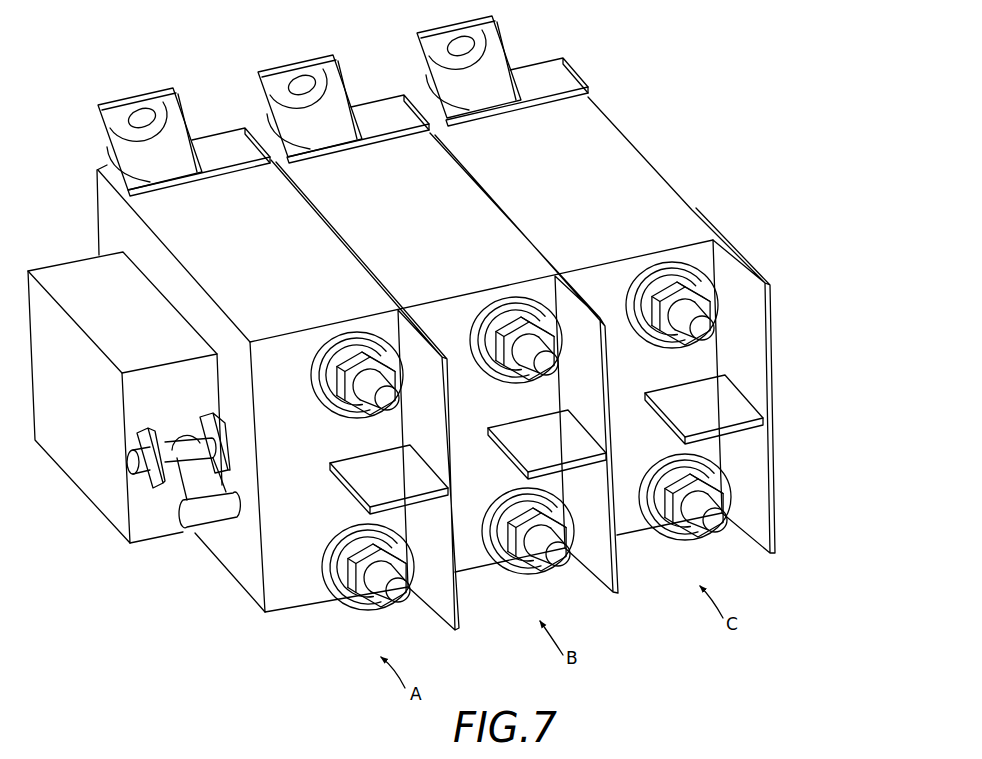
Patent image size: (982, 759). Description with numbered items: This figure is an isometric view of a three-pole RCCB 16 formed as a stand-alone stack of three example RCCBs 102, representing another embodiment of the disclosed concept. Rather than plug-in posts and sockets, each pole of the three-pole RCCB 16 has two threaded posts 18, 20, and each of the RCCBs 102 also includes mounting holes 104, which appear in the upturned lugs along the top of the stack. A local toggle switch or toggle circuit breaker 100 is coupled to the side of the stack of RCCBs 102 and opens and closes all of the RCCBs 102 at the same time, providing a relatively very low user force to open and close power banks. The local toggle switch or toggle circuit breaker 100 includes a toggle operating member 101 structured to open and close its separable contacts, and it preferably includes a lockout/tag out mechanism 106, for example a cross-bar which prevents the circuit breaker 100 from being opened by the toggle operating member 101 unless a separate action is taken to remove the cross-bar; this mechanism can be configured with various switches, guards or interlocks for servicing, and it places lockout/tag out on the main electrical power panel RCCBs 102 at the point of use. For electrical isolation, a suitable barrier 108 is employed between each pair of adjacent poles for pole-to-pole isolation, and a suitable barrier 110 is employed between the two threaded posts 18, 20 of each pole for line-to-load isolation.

The three-pole RCCB 16 is at (683, 138).
The threaded post 18 is at (387, 400).
The threaded post 20 is at (397, 598).
The local toggle switch or toggle circuit breaker 100 is at (72, 448).
The toggle operating member 101 is at (205, 520).
The RCCB 102 is at (233, 198).
The mounting hole 104 is at (142, 113).
The lockout/tag out mechanism 106 is at (197, 440).
The barrier 108 is at (460, 603).
The barrier 110 is at (367, 468).